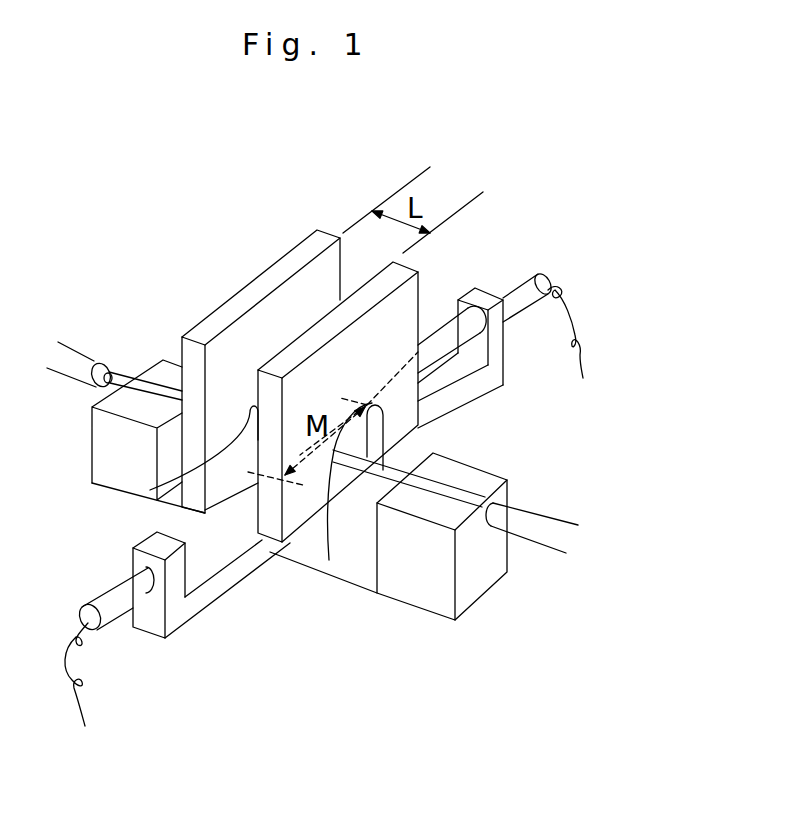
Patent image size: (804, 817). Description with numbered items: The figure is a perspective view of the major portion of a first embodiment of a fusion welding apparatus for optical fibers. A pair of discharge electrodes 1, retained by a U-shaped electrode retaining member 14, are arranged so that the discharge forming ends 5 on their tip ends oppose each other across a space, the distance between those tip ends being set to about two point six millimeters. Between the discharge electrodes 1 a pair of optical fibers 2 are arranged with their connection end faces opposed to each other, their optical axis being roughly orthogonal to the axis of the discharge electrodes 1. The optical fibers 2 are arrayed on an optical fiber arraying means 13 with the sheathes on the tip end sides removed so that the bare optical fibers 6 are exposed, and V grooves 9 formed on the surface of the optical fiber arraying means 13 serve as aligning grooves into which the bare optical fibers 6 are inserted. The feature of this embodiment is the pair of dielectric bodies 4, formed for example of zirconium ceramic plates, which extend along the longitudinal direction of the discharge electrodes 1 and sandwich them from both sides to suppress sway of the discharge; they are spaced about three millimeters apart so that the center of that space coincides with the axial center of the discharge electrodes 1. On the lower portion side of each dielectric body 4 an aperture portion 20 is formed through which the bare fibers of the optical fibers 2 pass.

The discharge electrode 1 is at (443, 323).
The optical fiber 2 is at (70, 353).
The dielectric body 4 is at (323, 238).
The discharge forming end 5 is at (367, 405).
The bare optical fiber 6 is at (120, 380).
The V groove 9 is at (488, 510).
The optical fiber arraying means 13 is at (322, 560).
The electrode retaining member 14 is at (480, 395).
The aperture portion 20 is at (170, 482).